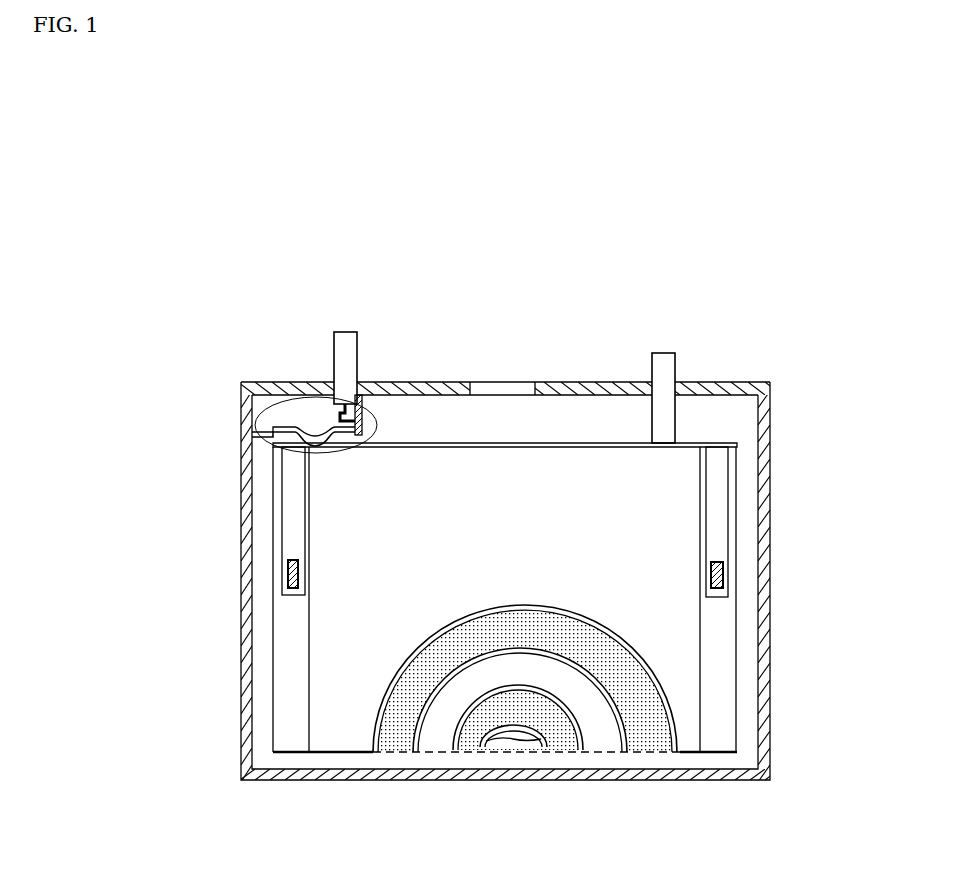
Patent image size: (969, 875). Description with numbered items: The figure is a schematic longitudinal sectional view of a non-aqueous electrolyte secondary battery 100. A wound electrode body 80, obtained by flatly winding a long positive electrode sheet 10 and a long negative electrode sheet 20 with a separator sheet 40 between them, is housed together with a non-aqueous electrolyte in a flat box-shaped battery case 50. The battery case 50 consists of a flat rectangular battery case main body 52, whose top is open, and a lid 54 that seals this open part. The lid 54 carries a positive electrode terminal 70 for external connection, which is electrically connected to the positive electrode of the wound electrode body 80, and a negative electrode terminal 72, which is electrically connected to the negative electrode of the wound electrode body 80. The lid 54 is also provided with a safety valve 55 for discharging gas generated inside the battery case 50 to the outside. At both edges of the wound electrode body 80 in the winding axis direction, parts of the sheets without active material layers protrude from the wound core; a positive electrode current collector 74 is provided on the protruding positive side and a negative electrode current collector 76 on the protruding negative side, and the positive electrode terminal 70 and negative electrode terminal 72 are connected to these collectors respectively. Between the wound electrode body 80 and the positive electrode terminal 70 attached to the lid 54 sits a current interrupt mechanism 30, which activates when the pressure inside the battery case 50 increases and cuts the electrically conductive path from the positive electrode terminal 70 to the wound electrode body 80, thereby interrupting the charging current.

The non-aqueous electrolyte secondary battery 100 is at (767, 283).
The positive electrode sheet 10 is at (395, 732).
The negative electrode sheet 20 is at (470, 732).
The separator sheet 40 is at (338, 730).
The current interrupt mechanism 30 is at (270, 405).
The battery case 50 is at (772, 542).
The battery case main body 52 is at (763, 728).
The lid 54 is at (613, 386).
The safety valve 55 is at (518, 388).
The positive electrode terminal 70 is at (346, 340).
The negative electrode terminal 72 is at (662, 370).
The positive electrode current collector 74 is at (292, 512).
The negative electrode current collector 76 is at (715, 470).
The wound electrode body 80 is at (447, 470).